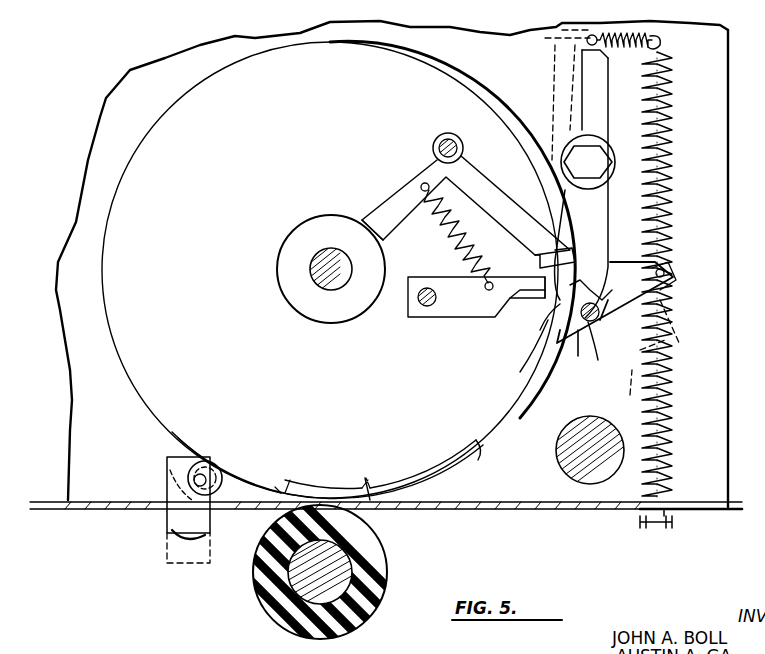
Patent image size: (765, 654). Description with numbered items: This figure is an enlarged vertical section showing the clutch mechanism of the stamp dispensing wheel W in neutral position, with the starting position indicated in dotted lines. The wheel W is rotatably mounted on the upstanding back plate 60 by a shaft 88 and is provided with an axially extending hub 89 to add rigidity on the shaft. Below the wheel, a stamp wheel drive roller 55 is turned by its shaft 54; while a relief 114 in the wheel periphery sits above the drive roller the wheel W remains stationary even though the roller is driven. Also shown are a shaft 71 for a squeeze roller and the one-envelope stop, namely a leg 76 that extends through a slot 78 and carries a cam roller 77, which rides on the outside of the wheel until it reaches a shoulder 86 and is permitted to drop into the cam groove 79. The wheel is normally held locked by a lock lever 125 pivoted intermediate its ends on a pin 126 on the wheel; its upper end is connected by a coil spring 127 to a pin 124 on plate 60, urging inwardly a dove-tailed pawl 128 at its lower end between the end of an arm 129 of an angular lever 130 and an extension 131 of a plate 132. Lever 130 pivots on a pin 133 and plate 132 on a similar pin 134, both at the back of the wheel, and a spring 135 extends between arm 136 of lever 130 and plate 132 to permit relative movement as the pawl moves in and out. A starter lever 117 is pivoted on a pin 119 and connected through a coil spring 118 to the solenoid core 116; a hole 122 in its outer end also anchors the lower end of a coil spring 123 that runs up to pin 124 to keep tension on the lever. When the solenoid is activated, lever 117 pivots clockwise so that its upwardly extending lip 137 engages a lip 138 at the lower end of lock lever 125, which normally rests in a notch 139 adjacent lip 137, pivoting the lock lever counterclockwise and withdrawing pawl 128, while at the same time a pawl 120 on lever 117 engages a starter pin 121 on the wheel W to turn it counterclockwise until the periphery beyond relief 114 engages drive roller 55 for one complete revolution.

The back plate 60 is at (102, 117).
The stamp dispensing wheel W is at (488, 98).
The hub 89 is at (292, 238).
The shaft 88 is at (310, 276).
The arm of angular lever 129 is at (492, 188).
The angular lever 130 is at (449, 133).
The pin 133 is at (437, 146).
The arm of angular lever 136 is at (378, 204).
The spring 135 is at (452, 236).
The plate 132 is at (445, 320).
The pin 134 is at (418, 304).
The extension of plate 131 is at (507, 292).
The starter pin 121 is at (522, 305).
The pawl 128 is at (540, 266).
The lip 137 is at (544, 328).
The pawl 120 is at (576, 352).
The lock lever 125 is at (566, 104).
The pin 126 is at (601, 158).
The coil spring 127 is at (624, 34).
The pin 124 is at (658, 44).
The coil spring 123 is at (669, 152).
The coil spring 118 is at (668, 422).
The solenoid core 116 is at (668, 530).
The starter lever 117 is at (670, 290).
The hole 122 is at (670, 268).
The lip 138 is at (596, 290).
The notch 139 is at (600, 316).
The pivot pin 119 is at (596, 338).
The shaft 71 is at (560, 468).
The cam groove 79 is at (405, 482).
The shoulder 86 is at (480, 458).
The relief 114 is at (372, 502).
The slot 78 is at (482, 510).
The cam roller 77 is at (222, 500).
The leg 76 is at (166, 522).
The shaft 54 is at (254, 580).
The stamp wheel drive roller 55 is at (380, 586).